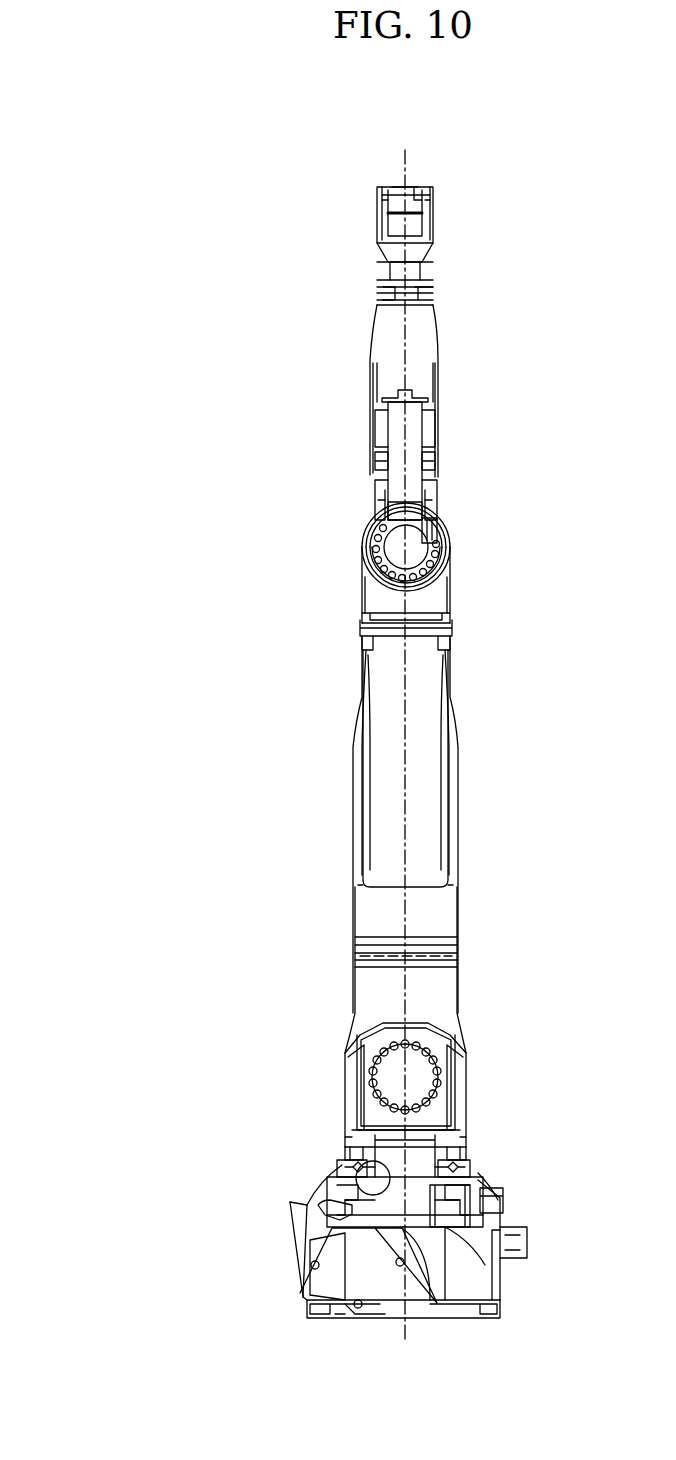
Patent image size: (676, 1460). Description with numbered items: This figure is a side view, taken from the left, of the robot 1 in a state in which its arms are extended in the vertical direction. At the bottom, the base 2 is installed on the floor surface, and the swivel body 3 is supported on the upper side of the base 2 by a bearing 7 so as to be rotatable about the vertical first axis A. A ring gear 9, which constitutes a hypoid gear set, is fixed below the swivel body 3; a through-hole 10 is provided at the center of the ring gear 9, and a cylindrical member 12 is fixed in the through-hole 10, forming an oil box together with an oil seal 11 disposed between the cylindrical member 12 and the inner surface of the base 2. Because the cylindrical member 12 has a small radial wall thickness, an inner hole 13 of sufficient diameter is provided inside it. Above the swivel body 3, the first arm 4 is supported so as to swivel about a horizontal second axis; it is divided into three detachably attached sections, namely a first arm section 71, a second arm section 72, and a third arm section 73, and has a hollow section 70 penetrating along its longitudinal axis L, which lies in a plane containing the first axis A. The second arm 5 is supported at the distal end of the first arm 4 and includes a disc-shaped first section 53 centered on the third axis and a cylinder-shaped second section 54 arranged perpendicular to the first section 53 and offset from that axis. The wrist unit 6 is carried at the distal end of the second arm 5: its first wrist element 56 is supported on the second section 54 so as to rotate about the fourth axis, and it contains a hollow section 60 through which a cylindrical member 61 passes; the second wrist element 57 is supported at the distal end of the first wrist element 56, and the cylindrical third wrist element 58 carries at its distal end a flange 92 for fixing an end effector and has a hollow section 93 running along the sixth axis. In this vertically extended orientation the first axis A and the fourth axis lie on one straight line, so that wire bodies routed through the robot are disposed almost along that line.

The robot 1 is at (118, 120).
The base 2 is at (295, 1248).
The swivel body 3 is at (347, 1125).
The first arm 4 is at (357, 728).
The second arm 5 is at (362, 522).
The wrist unit 6 is at (388, 182).
The bearing 7 is at (478, 1160).
The ring gear 9 is at (332, 1200).
The through-hole 10 is at (340, 1168).
The oil seal 11 is at (470, 1225).
The cylindrical member 12 is at (455, 1195).
The inner hole 13 is at (425, 1205).
The first section 53 is at (366, 530).
The second section 54 is at (376, 492).
The first wrist element 56 is at (368, 350).
The second wrist element 57 is at (380, 242).
The third wrist element 58 is at (378, 190).
The hollow section 60 is at (430, 428).
The cylindrical member 61 is at (430, 462).
The hollow section 70 is at (430, 810).
The first arm section 71 is at (367, 594).
The second arm section 72 is at (352, 808).
The third arm section 73 is at (355, 985).
The flange 92 is at (395, 186).
The hollow section 93 is at (417, 188).
The longitudinal axis L is at (408, 722).
The first axis A is at (403, 1330).